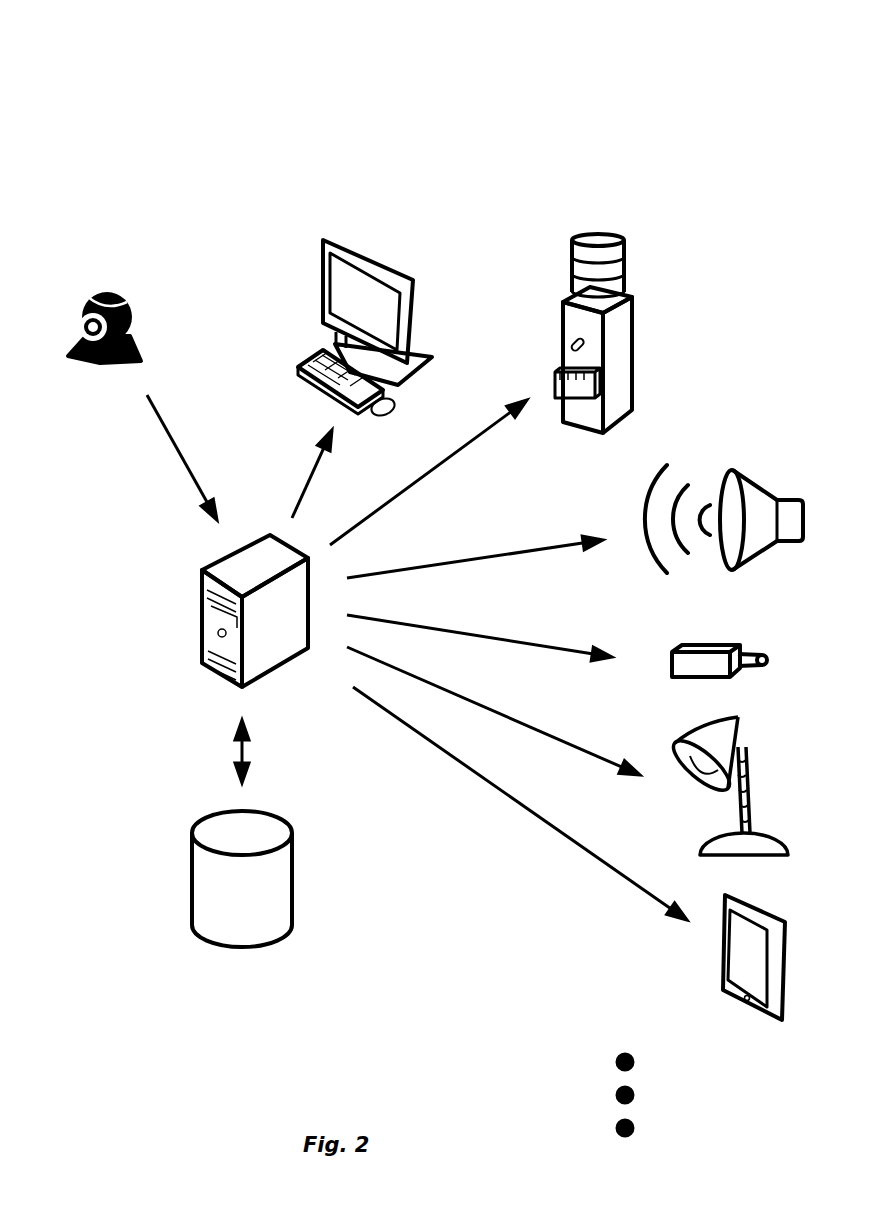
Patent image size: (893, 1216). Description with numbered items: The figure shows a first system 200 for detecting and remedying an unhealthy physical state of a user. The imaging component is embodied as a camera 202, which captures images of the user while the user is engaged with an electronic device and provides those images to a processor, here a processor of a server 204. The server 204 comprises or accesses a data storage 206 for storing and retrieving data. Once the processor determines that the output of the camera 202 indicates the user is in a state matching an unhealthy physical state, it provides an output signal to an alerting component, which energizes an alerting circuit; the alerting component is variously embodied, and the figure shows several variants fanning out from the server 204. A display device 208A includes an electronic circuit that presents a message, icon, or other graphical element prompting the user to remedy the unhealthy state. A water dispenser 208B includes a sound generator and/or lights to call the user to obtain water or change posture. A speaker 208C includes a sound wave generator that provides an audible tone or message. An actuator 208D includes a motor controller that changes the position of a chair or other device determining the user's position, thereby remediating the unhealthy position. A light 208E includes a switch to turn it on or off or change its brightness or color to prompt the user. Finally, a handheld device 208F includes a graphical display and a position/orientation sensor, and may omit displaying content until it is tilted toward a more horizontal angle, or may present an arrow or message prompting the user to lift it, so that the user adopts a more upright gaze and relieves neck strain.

The system 200 is at (670, 62).
The camera 202 is at (127, 298).
The server 204 is at (200, 592).
The data storage 206 is at (190, 860).
The display device 208A is at (380, 260).
The water dispenser 208B is at (630, 310).
The speaker 208C is at (757, 473).
The actuator 208D is at (708, 643).
The light 208E is at (750, 797).
The handheld device 208F is at (763, 1020).